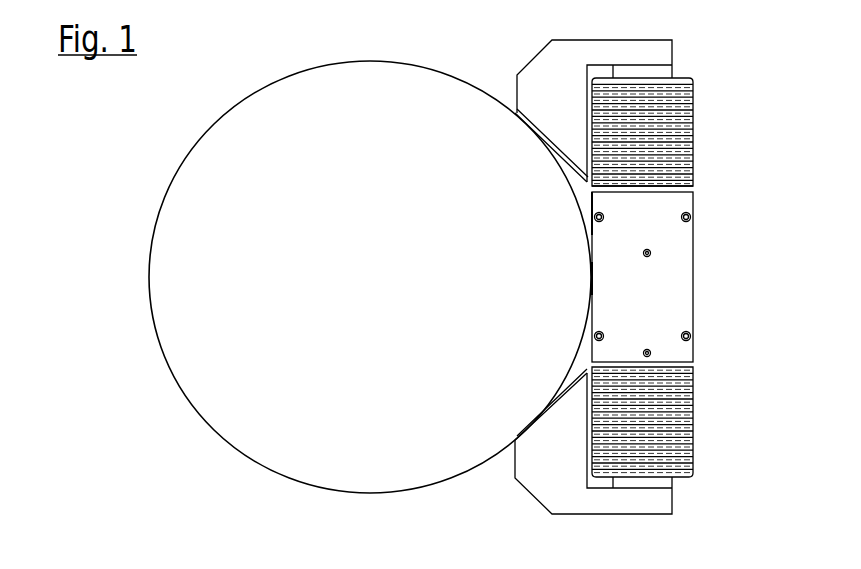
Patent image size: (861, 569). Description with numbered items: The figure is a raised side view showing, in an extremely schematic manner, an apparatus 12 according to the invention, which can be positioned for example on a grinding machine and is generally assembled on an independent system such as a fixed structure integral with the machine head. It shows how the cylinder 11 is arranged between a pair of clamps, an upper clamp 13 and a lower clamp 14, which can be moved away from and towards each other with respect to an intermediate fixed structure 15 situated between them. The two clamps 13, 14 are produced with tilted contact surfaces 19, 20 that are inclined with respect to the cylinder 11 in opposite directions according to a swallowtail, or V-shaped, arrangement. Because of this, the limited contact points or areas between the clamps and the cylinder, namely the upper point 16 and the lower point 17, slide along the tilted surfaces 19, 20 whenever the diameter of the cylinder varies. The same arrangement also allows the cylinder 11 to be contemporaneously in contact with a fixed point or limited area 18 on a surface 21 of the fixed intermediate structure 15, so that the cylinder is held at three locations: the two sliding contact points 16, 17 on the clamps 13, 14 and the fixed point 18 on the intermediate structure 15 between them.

The cylinder 11 is at (222, 192).
The apparatus 12 is at (740, 199).
The upper clamp 13 is at (622, 48).
The lower clamp 14 is at (620, 503).
The intermediate fixed structure 15 is at (663, 298).
The upper contact point 16 is at (535, 115).
The lower contact point 17 is at (523, 432).
The fixed contact point 18 is at (590, 277).
The tilted contact surface 19 is at (553, 152).
The tilted contact surface 20 is at (568, 390).
The surface 21 is at (590, 205).